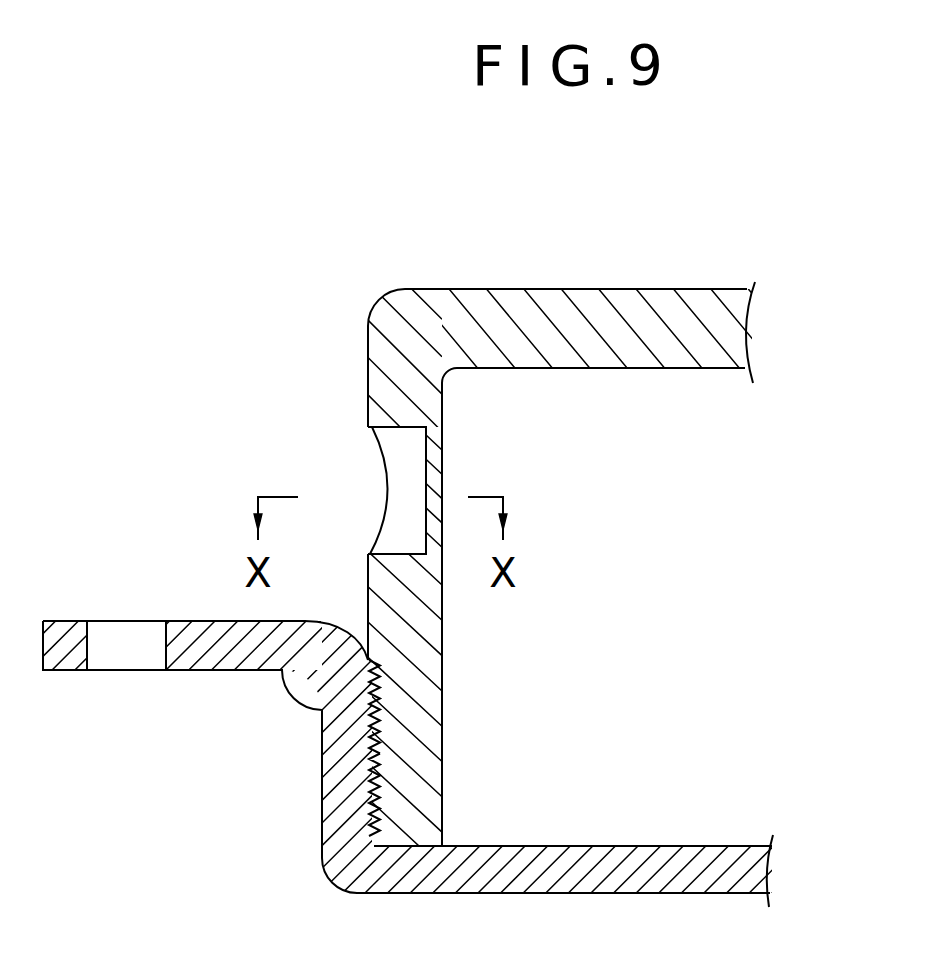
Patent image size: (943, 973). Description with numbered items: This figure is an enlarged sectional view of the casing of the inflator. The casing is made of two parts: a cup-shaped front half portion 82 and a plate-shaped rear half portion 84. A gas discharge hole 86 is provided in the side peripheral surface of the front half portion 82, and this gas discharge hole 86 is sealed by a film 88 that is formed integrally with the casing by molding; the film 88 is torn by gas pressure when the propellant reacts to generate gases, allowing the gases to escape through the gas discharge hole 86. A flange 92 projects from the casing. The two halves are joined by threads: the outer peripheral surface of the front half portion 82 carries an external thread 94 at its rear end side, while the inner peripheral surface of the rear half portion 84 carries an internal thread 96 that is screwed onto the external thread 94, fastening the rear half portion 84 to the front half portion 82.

The front half portion 82 is at (697, 300).
The rear half portion 84 is at (622, 893).
The gas discharge holes 86 is at (390, 446).
The films 88 is at (430, 470).
The flange 92 is at (212, 670).
The external thread 94 is at (372, 752).
The internal thread 96 is at (386, 801).